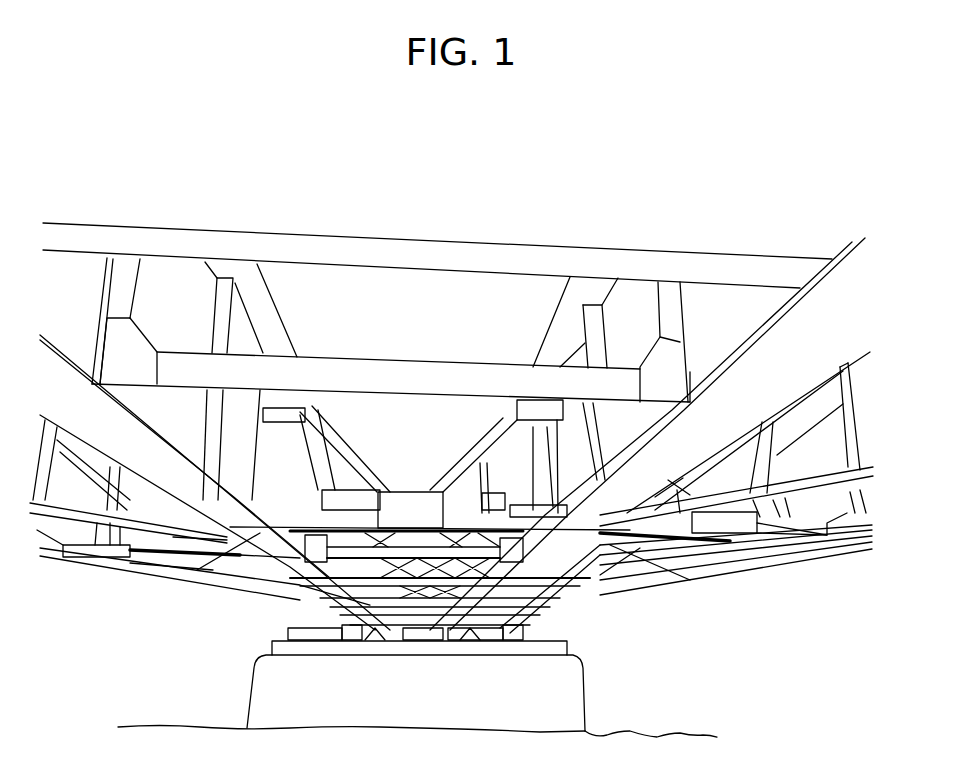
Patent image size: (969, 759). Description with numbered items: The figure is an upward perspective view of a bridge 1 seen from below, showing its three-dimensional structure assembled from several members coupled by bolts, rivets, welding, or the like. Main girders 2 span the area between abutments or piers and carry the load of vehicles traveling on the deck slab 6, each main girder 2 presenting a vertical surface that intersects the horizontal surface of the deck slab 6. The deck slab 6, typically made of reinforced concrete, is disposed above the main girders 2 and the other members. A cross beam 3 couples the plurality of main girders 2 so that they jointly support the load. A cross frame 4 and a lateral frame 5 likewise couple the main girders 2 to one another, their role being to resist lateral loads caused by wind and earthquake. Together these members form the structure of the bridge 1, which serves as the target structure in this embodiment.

The bridge 1 is at (563, 209).
The main girder 2 is at (152, 463).
The cross beam 3 is at (184, 368).
The cross frame 4 is at (350, 453).
The lateral frame 5 is at (727, 493).
The deck slab 6 is at (307, 276).